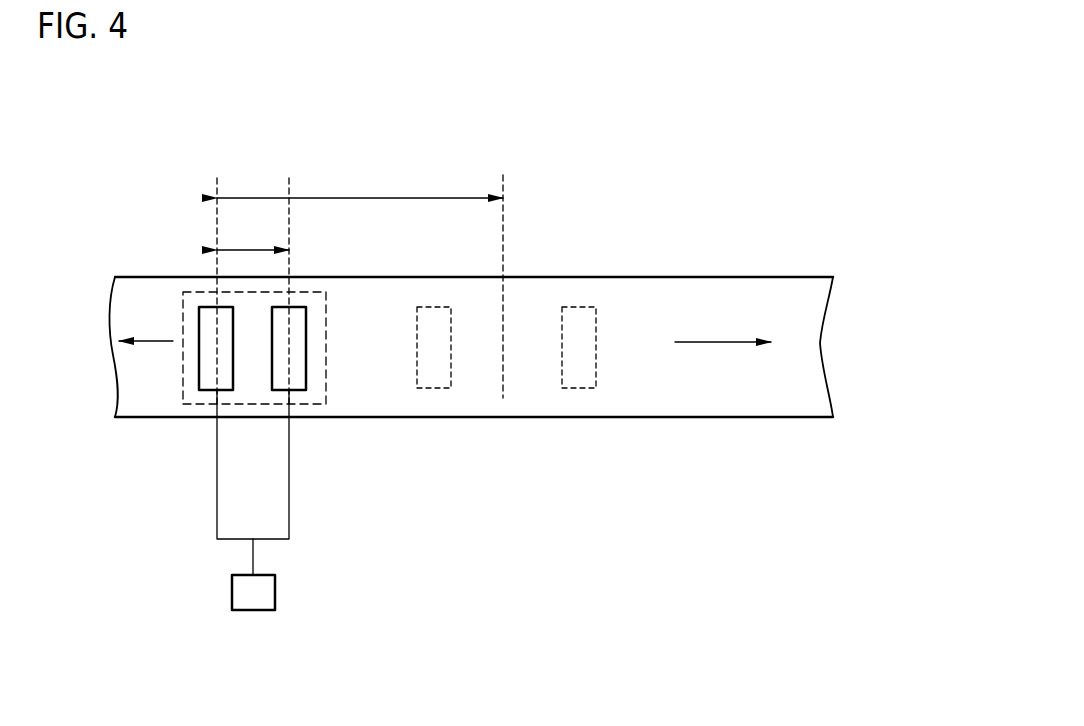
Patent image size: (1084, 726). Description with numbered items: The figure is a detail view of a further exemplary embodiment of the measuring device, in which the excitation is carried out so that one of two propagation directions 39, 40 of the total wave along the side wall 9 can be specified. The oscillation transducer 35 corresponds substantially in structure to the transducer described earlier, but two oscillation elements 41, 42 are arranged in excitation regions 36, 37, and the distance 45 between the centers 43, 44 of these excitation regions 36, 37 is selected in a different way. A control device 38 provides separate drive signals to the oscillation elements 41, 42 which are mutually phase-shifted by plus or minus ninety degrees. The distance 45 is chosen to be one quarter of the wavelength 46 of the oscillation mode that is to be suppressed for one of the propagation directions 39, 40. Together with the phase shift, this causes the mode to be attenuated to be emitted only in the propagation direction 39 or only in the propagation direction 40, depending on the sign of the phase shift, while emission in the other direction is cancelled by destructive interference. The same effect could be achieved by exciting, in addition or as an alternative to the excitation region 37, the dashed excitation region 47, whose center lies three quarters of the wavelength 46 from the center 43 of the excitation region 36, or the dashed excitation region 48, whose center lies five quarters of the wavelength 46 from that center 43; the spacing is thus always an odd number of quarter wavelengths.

The side wall 9 is at (662, 288).
The oscillation transducer 35 is at (198, 404).
The excitation region 36 is at (186, 312).
The excitation region 37 is at (314, 352).
The control device 38 is at (275, 602).
The propagation direction 39 is at (717, 342).
The propagation direction 40 is at (152, 343).
The oscillation element 41 is at (207, 306).
The oscillation element 42 is at (306, 373).
The center of excitation region 43 is at (216, 188).
The center of excitation region 44 is at (292, 186).
The distance 45 is at (256, 248).
The wavelength 46 is at (384, 197).
The excitation region 47 is at (422, 390).
The excitation region 48 is at (567, 390).